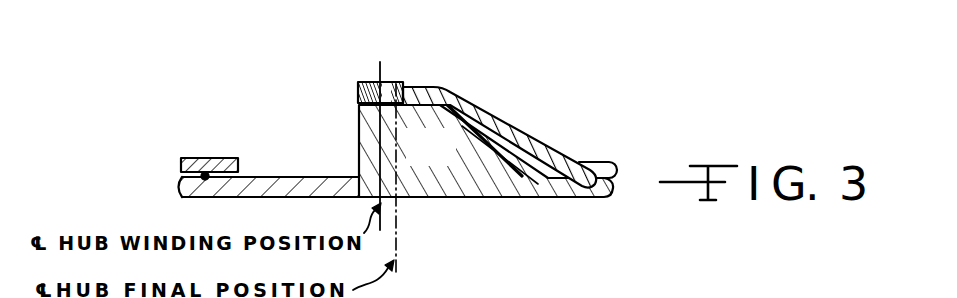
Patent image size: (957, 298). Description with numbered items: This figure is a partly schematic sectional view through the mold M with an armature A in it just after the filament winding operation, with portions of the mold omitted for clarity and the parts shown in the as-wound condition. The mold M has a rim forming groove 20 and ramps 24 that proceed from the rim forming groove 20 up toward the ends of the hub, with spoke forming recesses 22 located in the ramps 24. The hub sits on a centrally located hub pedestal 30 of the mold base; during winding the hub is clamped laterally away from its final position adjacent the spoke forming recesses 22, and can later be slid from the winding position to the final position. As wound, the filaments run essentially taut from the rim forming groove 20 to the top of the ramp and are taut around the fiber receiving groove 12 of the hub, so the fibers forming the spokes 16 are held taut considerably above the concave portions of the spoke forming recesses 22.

The fiber receiving groove 12 is at (397, 82).
The spokes 16 is at (524, 134).
The rim forming groove 20 is at (607, 181).
The spoke forming recesses 22 is at (538, 188).
The ramps 24 is at (486, 175).
The hub pedestal 30 is at (359, 125).
The armature A is at (466, 95).
The mold M is at (446, 161).